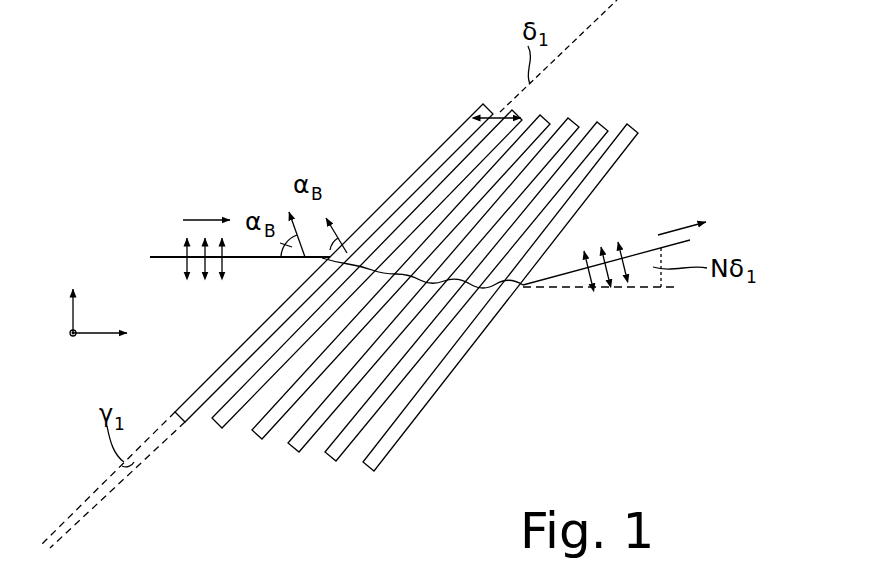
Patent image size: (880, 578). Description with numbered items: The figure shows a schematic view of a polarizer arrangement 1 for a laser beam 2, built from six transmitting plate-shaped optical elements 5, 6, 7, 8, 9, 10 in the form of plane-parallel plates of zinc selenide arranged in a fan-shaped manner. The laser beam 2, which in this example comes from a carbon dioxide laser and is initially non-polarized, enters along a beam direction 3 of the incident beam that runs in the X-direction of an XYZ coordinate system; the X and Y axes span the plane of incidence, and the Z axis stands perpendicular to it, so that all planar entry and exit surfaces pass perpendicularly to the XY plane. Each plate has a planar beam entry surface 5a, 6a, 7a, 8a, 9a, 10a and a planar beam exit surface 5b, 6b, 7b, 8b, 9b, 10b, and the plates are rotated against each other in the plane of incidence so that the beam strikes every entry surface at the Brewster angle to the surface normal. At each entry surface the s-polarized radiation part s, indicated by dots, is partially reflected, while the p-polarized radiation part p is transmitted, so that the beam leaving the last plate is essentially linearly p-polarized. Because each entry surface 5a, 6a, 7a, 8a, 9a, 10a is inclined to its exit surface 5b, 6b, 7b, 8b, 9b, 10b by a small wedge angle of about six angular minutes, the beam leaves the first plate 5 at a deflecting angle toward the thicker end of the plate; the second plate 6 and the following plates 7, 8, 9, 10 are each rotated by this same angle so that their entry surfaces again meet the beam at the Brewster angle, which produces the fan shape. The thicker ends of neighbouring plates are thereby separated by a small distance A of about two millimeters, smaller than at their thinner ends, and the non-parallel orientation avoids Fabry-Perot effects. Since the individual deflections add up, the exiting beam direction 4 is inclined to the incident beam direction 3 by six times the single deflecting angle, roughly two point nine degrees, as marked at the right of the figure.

The polarizer arrangement 1 is at (698, 92).
The laser beam 2 is at (173, 264).
The beam direction of the incident laser beam 3 is at (193, 220).
The beam direction of the exiting laser beam 4 is at (672, 228).
The first plate-shaped optical element 5 is at (428, 152).
The beam entry surface of the first plate-shaped optical element 5a is at (462, 130).
The beam exit surface of the first plate-shaped optical element 5b is at (441, 168).
The second plate-shaped optical element 6 is at (523, 112).
The beam entry surface of the second plate-shaped optical element 6a is at (410, 208).
The beam exit surface of the second plate-shaped optical element 6b is at (415, 243).
The third plate-shaped optical element 7 is at (553, 117).
The beam entry surface of the third plate-shaped optical element 7a is at (285, 386).
The beam exit surface of the third plate-shaped optical element 7b is at (297, 409).
The fourth plate-shaped optical element 8 is at (582, 120).
The beam entry surface of the fourth plate-shaped optical element 8a is at (332, 384).
The beam exit surface of the fourth plate-shaped optical element 8b is at (337, 411).
The fifth plate-shaped optical element 9 is at (610, 127).
The beam entry surface of the fifth plate-shaped optical element 9a is at (371, 391).
The beam exit surface of the fifth plate-shaped optical element 9b is at (378, 418).
The sixth plate-shaped optical element 10 is at (634, 128).
The beam entry surface of the sixth plate-shaped optical element 10a is at (458, 338).
The beam exit surface of the sixth plate-shaped optical element 10b is at (477, 354).
The distance A is at (502, 108).
The s-polarized radiation part s is at (231, 258).
The p-polarized radiation part p is at (222, 263).
The X-direction X is at (101, 348).
The Y-direction Y is at (62, 304).
The Z-direction Z is at (63, 347).